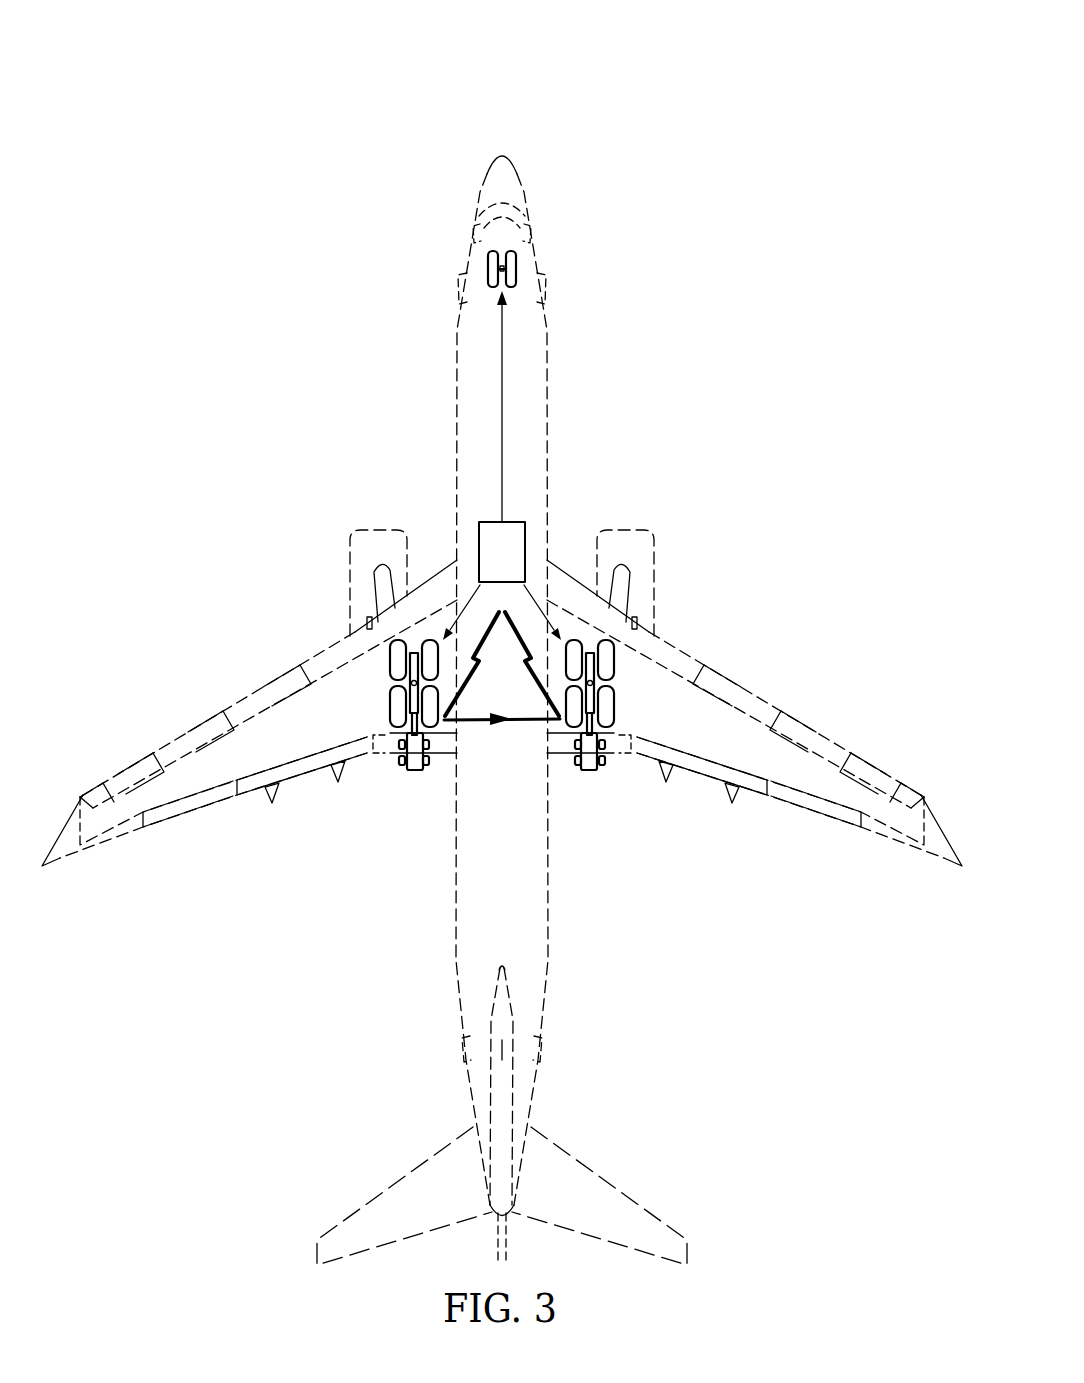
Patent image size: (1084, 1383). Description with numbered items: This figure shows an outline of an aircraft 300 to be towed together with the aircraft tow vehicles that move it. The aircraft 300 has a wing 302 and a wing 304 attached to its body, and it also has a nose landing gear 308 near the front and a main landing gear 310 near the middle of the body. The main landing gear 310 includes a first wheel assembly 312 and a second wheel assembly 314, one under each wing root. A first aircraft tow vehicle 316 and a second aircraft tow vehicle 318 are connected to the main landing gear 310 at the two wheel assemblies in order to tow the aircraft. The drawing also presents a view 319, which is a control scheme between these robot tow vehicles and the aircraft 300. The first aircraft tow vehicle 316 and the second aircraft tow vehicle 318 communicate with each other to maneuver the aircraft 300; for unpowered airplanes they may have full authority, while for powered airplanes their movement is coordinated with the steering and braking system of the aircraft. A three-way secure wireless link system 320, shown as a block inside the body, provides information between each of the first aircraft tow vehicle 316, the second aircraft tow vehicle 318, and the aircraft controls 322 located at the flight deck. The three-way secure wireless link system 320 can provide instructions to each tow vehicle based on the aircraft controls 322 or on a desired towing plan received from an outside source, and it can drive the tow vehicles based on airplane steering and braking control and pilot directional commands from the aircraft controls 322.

The aircraft 300 is at (618, 114).
The wing 302 is at (874, 767).
The wing 304 is at (130, 767).
The nose landing gear 308 is at (487, 263).
The main landing gear 310 is at (684, 540).
The first wheel assembly 312 is at (633, 679).
The second wheel assembly 314 is at (371, 679).
The first aircraft tow vehicle 316 is at (591, 772).
The second aircraft tow vehicle 318 is at (413, 772).
The view 319 is at (723, 61).
The three-way secure wireless link system 320 is at (478, 535).
The aircraft controls 322 is at (508, 202).